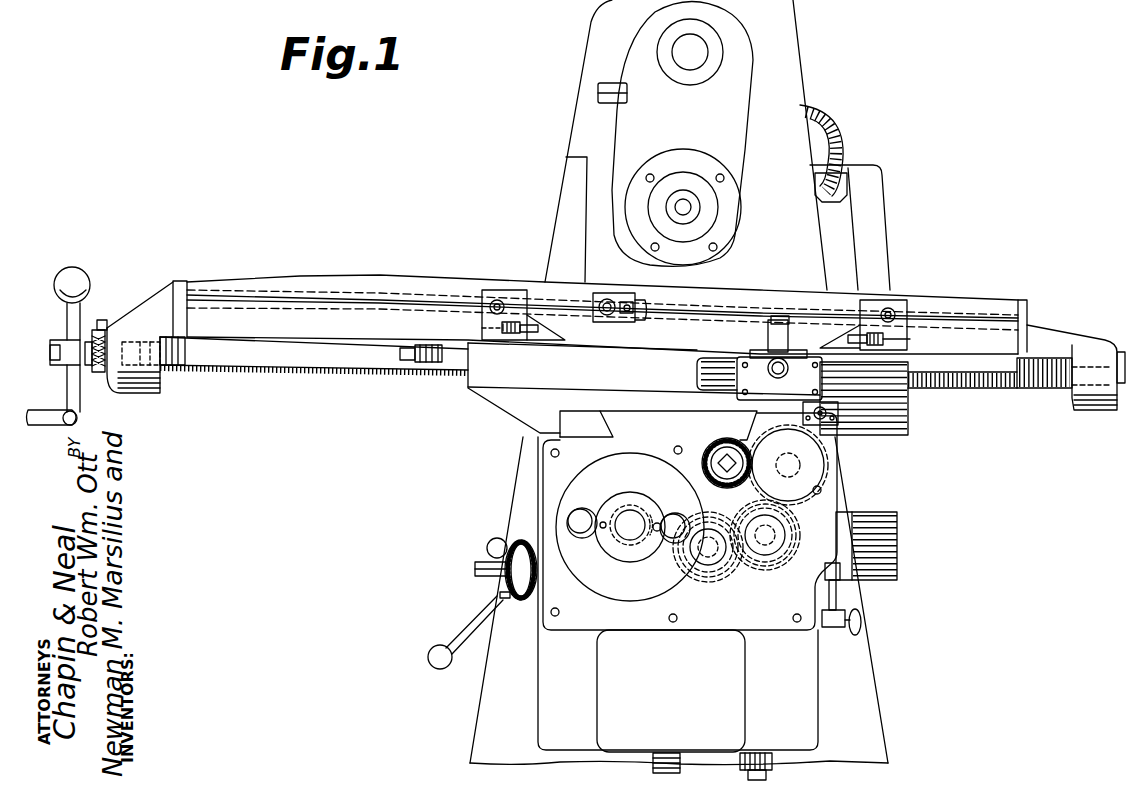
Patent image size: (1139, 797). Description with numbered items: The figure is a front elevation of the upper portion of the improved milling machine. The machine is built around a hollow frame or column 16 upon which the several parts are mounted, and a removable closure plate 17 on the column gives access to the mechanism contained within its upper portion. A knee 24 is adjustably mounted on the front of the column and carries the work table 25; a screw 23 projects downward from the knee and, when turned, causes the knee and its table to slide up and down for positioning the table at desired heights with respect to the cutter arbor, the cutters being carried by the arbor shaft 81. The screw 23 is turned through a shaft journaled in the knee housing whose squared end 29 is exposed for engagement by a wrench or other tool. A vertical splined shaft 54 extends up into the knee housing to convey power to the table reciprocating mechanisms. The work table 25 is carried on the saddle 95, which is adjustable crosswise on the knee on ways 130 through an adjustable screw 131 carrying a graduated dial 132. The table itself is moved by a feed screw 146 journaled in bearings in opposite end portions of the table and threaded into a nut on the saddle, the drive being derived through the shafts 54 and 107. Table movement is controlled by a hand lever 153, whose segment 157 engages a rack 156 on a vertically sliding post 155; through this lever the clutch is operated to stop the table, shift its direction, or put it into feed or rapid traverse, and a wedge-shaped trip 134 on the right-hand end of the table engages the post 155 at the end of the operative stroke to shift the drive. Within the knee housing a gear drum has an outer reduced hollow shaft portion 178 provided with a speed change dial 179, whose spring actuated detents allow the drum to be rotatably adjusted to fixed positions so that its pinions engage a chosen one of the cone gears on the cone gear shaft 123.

The hollow frame or column 16 is at (515, 501).
The removable closure plate 17 is at (563, 221).
The screw 23 is at (670, 752).
The knee 24 is at (550, 693).
The work table 25 is at (368, 278).
The squared end 29 is at (478, 572).
The vertical splined shaft 54 is at (770, 770).
The arbor shaft 81 is at (690, 200).
The saddle 95 is at (644, 388).
The shaft 107 is at (765, 545).
The cone gear shaft 123 is at (708, 557).
The ways 130 is at (610, 428).
The adjustable screw 131 is at (717, 450).
The graduated dial 132 is at (730, 443).
The wedge-shaped trip 134 is at (838, 345).
The feed screw 146 is at (330, 372).
The hand lever 153 is at (774, 377).
The post 155 is at (781, 318).
The rack 156 is at (790, 320).
The segment 157 is at (770, 320).
The outer reduced hollow shaft portion 178 is at (617, 538).
The speed change dial 179 is at (623, 587).